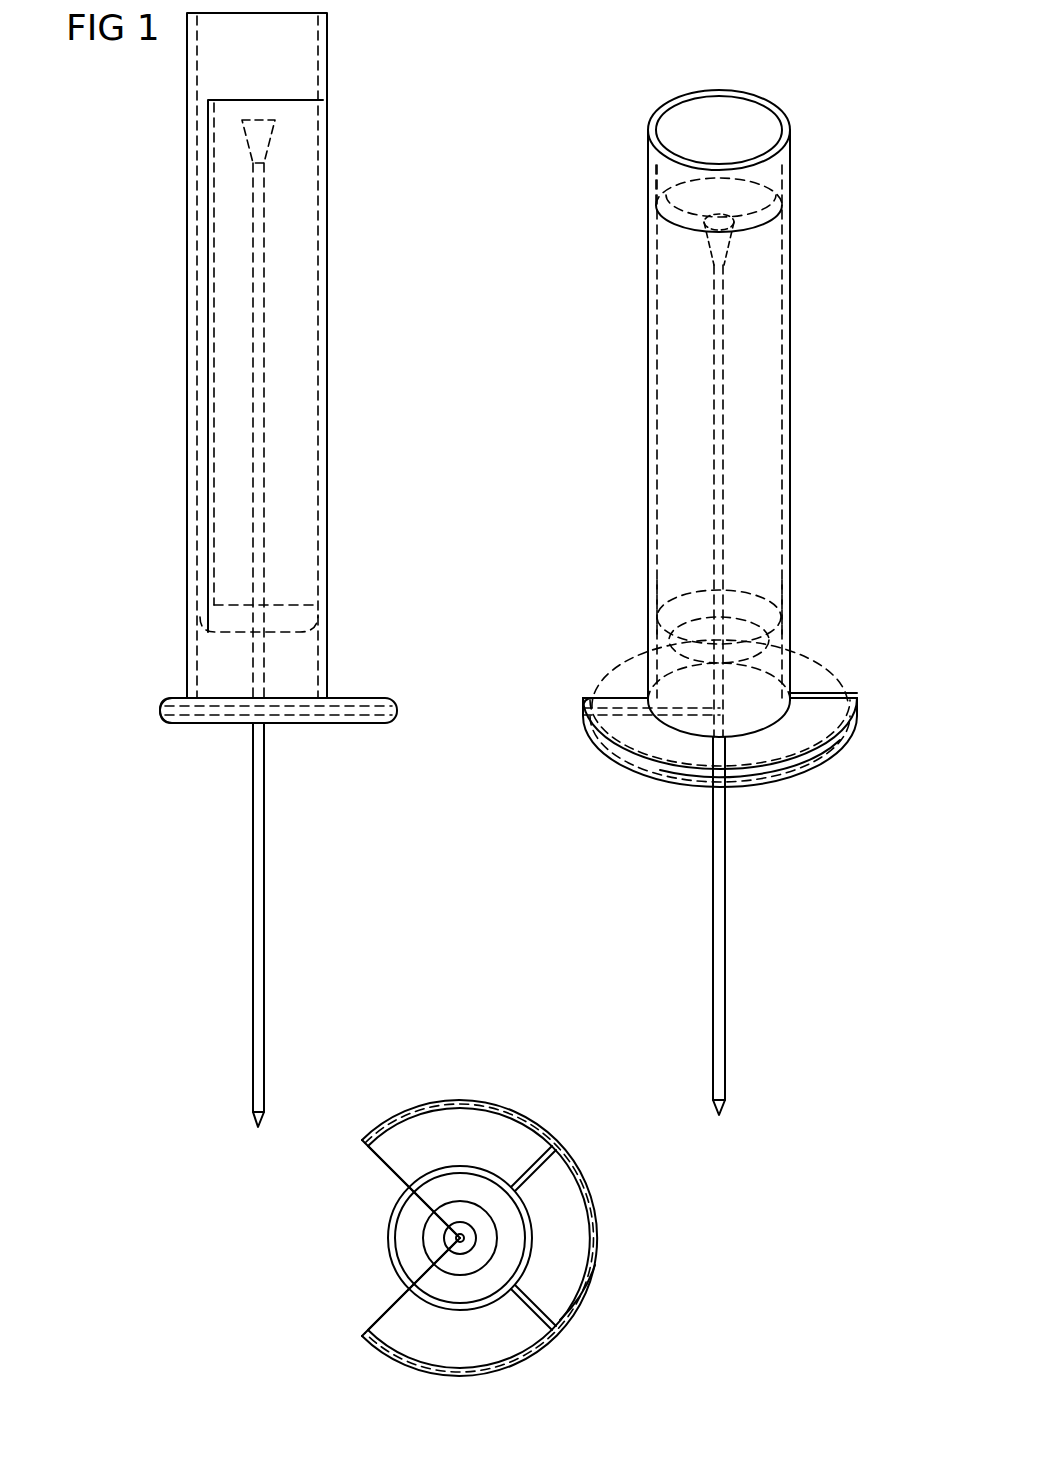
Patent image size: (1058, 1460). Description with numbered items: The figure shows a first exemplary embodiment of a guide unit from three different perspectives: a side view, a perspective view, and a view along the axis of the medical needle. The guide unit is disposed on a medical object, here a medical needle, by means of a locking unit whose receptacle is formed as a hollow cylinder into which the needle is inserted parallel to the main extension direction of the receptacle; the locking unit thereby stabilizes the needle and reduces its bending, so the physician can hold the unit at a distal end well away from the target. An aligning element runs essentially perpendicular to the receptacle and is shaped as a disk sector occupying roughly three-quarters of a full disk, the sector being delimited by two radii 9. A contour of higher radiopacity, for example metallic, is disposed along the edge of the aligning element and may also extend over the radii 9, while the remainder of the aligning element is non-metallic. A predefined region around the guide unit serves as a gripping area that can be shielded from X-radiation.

The radii 9 is at (386, 1170).